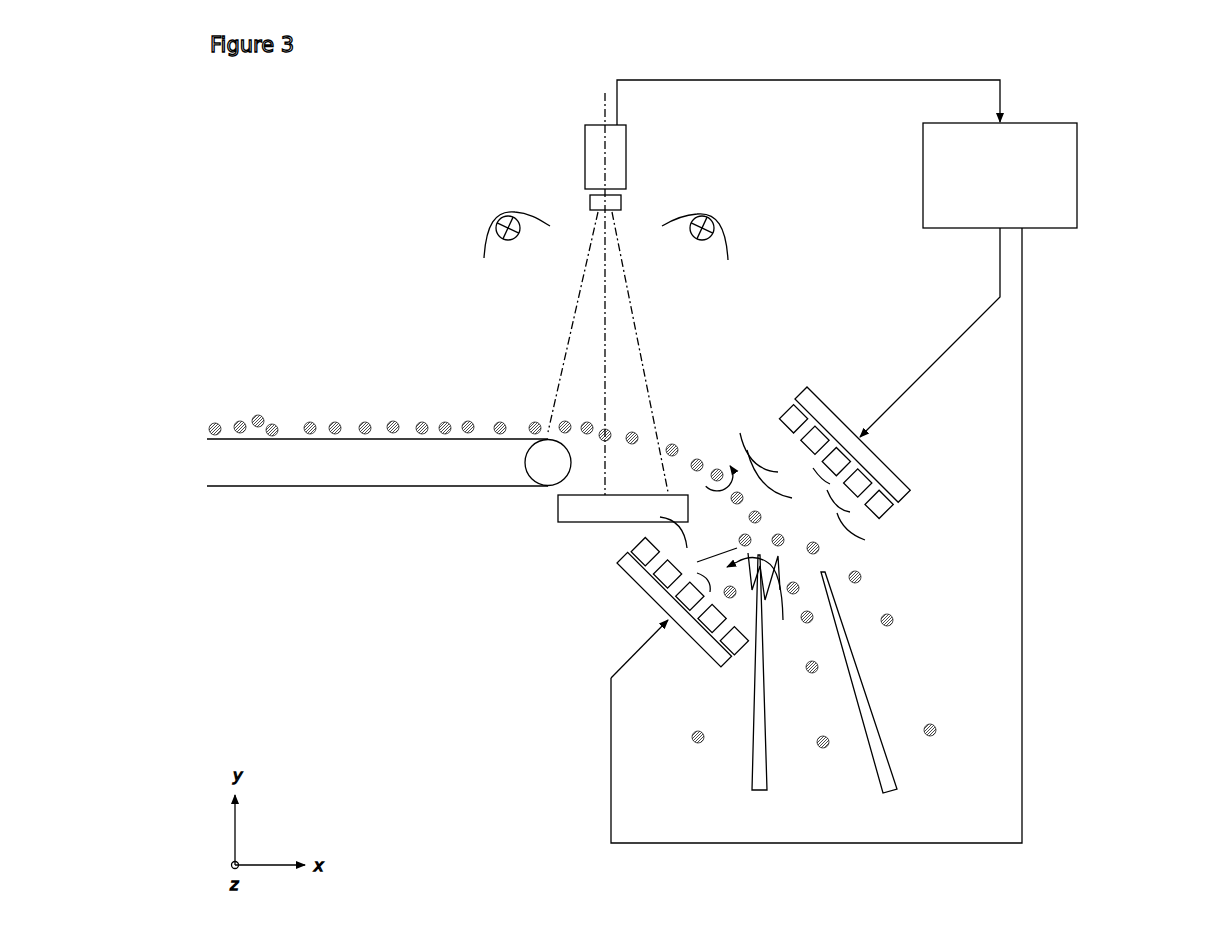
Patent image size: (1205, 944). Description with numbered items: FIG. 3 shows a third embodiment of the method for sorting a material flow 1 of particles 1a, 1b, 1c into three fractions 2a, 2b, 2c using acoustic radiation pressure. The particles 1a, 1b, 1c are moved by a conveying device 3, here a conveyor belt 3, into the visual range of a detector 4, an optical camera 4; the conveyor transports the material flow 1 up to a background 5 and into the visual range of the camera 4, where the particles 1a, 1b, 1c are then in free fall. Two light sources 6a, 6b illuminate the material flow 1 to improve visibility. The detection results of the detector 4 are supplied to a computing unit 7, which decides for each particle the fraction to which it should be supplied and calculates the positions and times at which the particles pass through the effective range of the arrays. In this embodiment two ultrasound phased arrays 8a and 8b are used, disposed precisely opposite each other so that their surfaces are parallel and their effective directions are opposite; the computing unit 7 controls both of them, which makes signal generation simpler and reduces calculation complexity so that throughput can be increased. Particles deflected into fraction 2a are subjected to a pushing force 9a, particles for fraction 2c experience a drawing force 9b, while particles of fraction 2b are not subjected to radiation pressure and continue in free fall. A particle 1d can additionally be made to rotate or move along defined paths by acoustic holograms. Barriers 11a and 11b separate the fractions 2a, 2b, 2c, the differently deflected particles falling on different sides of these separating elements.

The material flow 1 is at (313, 425).
The particle 1a is at (365, 425).
The particle 1b is at (425, 425).
The particle 1c is at (502, 425).
The particle 1d is at (714, 464).
The fraction 2a is at (692, 732).
The fraction 2b is at (811, 675).
The fraction 2c is at (903, 622).
The conveying device 3 is at (271, 460).
The detector 4 is at (597, 148).
The background 5 is at (567, 505).
The light source 6a is at (488, 232).
The light source 6b is at (718, 212).
The computing unit 7 is at (1040, 175).
The ultrasound phased array 8a is at (882, 467).
The ultrasound phased array 8b is at (637, 585).
The pushing force 9a is at (697, 562).
The drawing force 9b is at (828, 551).
The barrier 11a is at (765, 768).
The barrier 11b is at (887, 772).